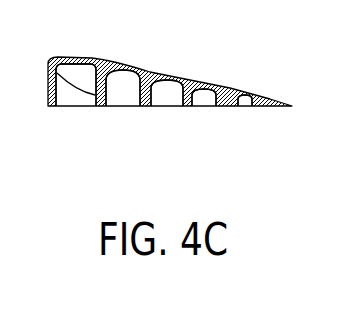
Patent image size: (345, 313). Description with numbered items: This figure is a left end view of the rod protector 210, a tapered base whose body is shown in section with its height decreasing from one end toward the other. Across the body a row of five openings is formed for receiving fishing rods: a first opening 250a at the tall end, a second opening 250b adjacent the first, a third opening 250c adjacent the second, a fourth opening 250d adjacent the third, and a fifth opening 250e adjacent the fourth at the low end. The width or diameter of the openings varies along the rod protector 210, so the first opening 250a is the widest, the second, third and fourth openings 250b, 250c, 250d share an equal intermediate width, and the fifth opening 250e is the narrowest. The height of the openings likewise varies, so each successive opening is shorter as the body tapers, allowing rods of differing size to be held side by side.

The rod protector 210 is at (176, 66).
The first opening 250a is at (71, 124).
The second opening 250b is at (123, 124).
The third opening 250c is at (168, 124).
The fourth opening 250d is at (205, 124).
The fifth opening 250e is at (247, 124).